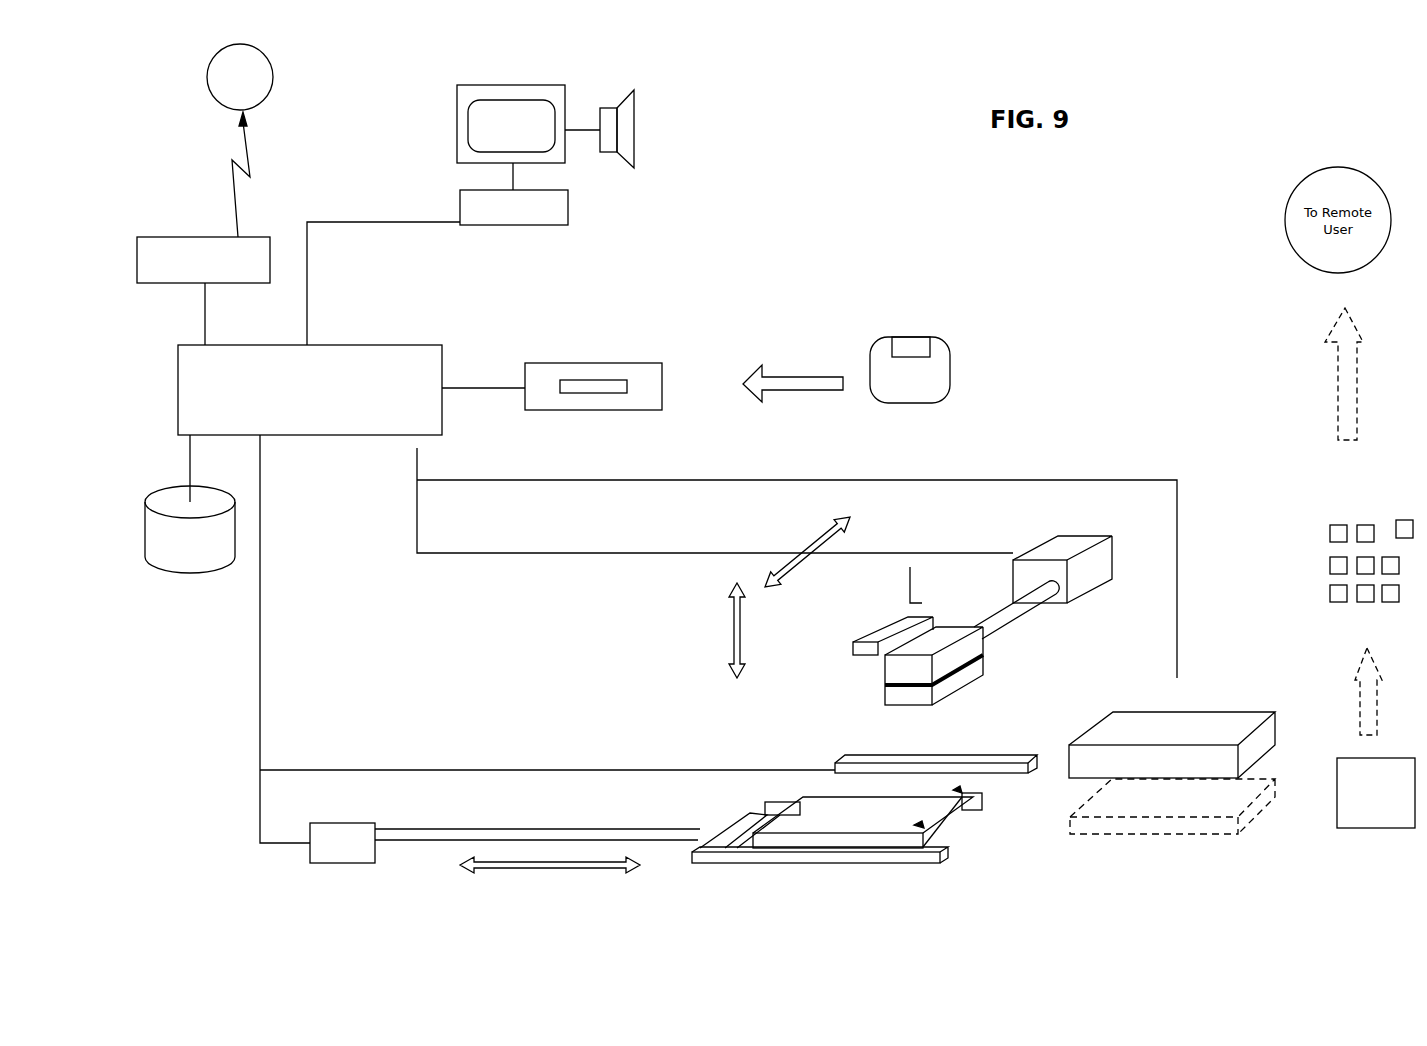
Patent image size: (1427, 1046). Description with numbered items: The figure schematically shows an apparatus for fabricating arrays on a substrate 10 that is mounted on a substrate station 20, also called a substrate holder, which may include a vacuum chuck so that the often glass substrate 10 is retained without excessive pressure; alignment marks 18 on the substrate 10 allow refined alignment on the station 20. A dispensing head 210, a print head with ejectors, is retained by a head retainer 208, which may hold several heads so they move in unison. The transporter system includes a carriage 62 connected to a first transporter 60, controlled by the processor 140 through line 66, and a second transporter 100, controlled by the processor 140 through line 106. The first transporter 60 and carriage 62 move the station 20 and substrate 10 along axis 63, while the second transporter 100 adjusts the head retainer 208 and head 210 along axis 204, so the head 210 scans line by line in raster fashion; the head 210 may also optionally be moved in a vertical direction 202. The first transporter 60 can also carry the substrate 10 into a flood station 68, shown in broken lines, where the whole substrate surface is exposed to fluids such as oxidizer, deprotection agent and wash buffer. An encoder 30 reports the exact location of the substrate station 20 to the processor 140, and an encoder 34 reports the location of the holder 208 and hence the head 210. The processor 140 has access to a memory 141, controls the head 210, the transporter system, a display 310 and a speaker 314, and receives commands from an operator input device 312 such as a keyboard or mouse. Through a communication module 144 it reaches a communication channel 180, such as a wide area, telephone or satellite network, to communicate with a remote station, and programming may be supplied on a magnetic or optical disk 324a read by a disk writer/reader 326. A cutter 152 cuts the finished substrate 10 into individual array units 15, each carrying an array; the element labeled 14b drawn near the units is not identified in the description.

The communication channel 180 is at (240, 77).
The communication module 144 is at (150, 232).
The display 310 is at (452, 116).
The operator input device 312 is at (457, 188).
The speaker 314 is at (640, 131).
The processor 140 is at (310, 390).
The memory 141 is at (167, 572).
The disk writer/reader 326 is at (668, 413).
The magnetic or optical disk 324a is at (940, 406).
The line 106 is at (480, 556).
The axis 204 is at (808, 538).
The second transporter 100 is at (1062, 540).
The vertical direction 202 is at (727, 648).
The encoder 34 is at (868, 642).
The head retainer 208 is at (961, 659).
The dispensing head 210 is at (885, 695).
The encoder 30 is at (860, 752).
The substrate 10 is at (808, 806).
The line 66 is at (260, 825).
The first transporter 60 is at (357, 818).
The axis 63 is at (578, 867).
The carriage 62 is at (414, 848).
The alignment marks 18 is at (960, 797).
The substrate station 20 is at (920, 865).
The flood station 68 is at (1083, 768).
The array units 15 is at (1405, 518).
The keypad 14b is at (1330, 558).
The cutter 152 is at (1376, 793).